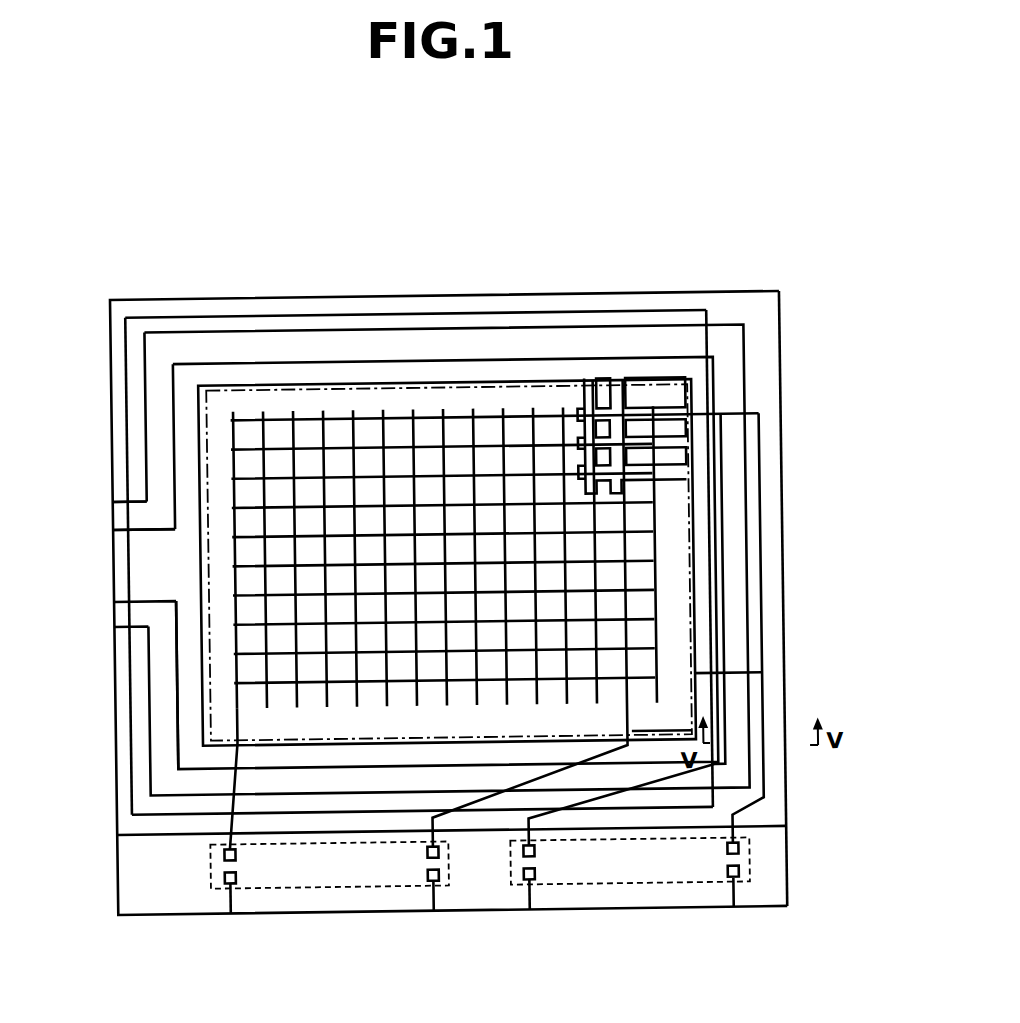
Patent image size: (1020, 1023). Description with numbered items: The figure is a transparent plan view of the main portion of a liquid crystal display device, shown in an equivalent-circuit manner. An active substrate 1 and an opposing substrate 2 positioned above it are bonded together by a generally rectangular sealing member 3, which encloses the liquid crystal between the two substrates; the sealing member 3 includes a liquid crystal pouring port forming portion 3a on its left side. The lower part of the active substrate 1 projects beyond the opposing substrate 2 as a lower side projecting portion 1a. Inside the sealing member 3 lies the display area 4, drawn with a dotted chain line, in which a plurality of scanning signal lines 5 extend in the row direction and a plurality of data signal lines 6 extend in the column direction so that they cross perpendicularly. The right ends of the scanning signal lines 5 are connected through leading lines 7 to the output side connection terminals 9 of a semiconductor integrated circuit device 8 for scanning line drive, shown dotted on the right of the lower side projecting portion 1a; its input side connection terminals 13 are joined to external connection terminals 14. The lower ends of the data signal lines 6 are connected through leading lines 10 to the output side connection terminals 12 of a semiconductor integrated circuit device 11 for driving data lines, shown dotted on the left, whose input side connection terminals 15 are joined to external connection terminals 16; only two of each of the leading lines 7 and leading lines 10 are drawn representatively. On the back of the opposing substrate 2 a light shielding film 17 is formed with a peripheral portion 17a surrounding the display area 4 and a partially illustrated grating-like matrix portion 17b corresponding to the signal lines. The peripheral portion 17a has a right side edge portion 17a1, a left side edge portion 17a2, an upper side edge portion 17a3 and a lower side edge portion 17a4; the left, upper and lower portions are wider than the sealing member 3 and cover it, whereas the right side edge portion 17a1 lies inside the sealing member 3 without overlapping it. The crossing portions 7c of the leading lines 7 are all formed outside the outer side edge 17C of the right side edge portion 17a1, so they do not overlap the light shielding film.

The active substrate 1 is at (780, 864).
The lower side projecting portion 1a is at (127, 880).
The opposing substrate 2 is at (781, 786).
The sealing member 3 is at (322, 348).
The liquid crystal pouring port forming portion 3a is at (117, 518).
The display area 4 is at (514, 398).
The scanning signal lines 5 is at (398, 416).
The data signal lines 6 is at (229, 580).
The leading lines 7 is at (758, 452).
The crossing portions 7c is at (756, 422).
The semiconductor integrated circuit device for scanning line drive 8 is at (635, 874).
The output side connection terminals (scanning signal terminals) 9 is at (526, 859).
The leading lines 10 is at (226, 780).
The semiconductor integrated circuit device for driving data lines 11 is at (337, 888).
The output side connection terminals (data signal terminals) 12 is at (230, 857).
The input side connection terminals 13 is at (525, 884).
The external connection terminals 14 is at (520, 897).
The input side connection terminals 15 is at (228, 881).
The external connection terminals 16 is at (222, 899).
The light shielding film 17 is at (625, 325).
The peripheral portion 17a is at (437, 320).
The right side edge portion 17a1 is at (697, 395).
The left side edge portion 17a2 is at (167, 669).
The upper side edge portion 17a3 is at (233, 325).
The lower side edge portion 17a4 is at (675, 806).
The matrix portion 17b is at (622, 392).
The outer side edge 17C is at (708, 591).